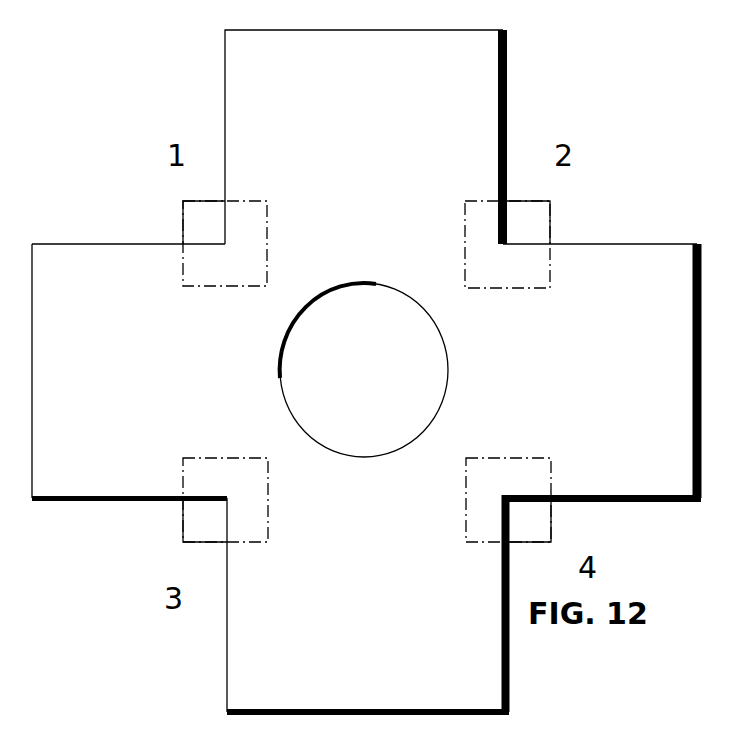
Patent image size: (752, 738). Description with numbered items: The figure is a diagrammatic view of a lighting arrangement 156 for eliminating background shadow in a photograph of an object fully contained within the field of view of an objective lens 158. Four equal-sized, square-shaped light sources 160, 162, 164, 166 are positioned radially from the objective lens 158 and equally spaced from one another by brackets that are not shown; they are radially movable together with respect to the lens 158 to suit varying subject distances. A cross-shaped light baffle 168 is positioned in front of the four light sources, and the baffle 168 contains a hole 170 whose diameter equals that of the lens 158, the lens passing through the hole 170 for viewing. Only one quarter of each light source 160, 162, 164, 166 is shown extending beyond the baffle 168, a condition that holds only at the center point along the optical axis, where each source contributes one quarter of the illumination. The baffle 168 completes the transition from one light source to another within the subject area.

The lighting arrangement 156 is at (540, 116).
The objective lens 158 is at (412, 372).
The light source 160 is at (199, 287).
The light source 162 is at (480, 288).
The light source 164 is at (268, 463).
The light source 166 is at (465, 463).
The cross-shaped light baffle 168 is at (78, 478).
The hole 170 is at (438, 327).